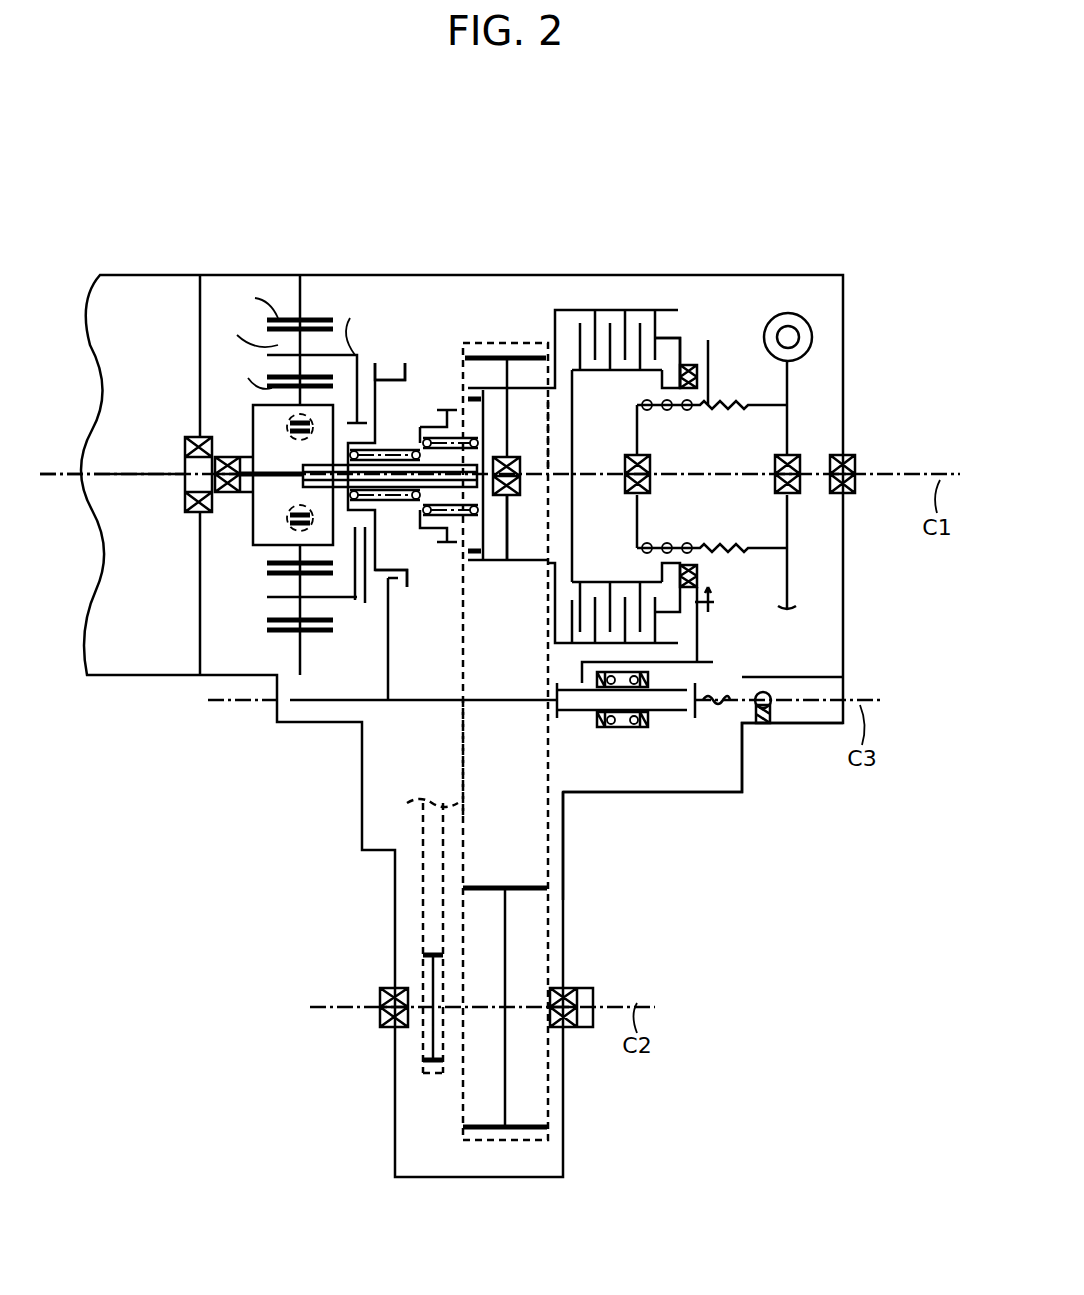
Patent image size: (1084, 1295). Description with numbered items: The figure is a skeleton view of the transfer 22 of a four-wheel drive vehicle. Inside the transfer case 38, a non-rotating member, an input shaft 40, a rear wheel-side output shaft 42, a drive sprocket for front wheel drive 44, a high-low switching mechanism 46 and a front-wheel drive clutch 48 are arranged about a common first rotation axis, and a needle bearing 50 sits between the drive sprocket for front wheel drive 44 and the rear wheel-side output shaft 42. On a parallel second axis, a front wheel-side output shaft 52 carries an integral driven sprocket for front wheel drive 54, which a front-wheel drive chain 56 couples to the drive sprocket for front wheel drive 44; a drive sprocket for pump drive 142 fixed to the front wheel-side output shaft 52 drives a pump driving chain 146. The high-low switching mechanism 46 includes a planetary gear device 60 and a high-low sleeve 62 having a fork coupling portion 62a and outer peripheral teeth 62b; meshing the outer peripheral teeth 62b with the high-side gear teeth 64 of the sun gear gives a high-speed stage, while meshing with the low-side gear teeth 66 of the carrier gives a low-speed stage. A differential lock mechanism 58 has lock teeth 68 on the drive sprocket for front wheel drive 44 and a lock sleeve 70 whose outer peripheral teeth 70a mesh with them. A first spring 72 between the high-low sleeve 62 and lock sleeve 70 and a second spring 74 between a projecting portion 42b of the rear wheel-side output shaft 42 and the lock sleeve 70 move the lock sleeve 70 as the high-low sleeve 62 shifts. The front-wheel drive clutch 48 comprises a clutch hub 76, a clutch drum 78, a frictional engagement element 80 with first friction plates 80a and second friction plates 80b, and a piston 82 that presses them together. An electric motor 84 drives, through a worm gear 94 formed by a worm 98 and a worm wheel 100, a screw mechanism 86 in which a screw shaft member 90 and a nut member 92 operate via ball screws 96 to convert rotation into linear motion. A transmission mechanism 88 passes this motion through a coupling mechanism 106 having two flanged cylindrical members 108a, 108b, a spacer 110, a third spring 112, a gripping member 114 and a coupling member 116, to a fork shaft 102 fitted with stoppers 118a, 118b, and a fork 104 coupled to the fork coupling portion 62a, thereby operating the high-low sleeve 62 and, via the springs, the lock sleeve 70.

The transfer 22 is at (800, 168).
The transfer case 38 is at (218, 274).
The input shaft 40 is at (143, 474).
The rear wheel-side output shaft 42 is at (858, 474).
The projecting portion 42b is at (549, 432).
The drive sprocket for front wheel drive 44 is at (495, 342).
The high-low switching mechanism 46 is at (358, 240).
The front-wheel drive clutch 48 is at (643, 427).
The needle bearing 50 is at (518, 493).
The front wheel-side output shaft 52 is at (485, 1010).
The driven sprocket for front wheel drive 54 is at (512, 885).
The front-wheel drive chain 56 is at (462, 747).
The differential lock mechanism 58 is at (455, 349).
The planetary gear device 60 is at (298, 292).
The high-low sleeve 62 is at (393, 540).
The fork coupling portion 62a is at (378, 363).
The outer peripheral teeth 62b is at (298, 427).
The high-side gear teeth 64 is at (300, 518).
The low-side gear teeth 66 is at (363, 600).
The lock teeth 68 is at (468, 545).
The lock sleeve 70 is at (393, 396).
The outer peripheral teeth 70a is at (400, 428).
The first spring 72 is at (422, 512).
The second spring 74 is at (500, 455).
The clutch hub 76 is at (594, 375).
The clutch drum 78 is at (598, 310).
The frictional engagement element 80 is at (662, 336).
The first friction plates 80a is at (615, 585).
The second friction plates 80b is at (575, 628).
The piston 82 is at (698, 370).
The electric motor 84 is at (782, 300).
The screw mechanism 86 is at (712, 566).
The transmission mechanism 88 is at (738, 760).
The screw shaft member 90 is at (740, 547).
The nut member 92 is at (712, 378).
The worm gear 94 is at (831, 351).
The ball screws 96 is at (668, 412).
The worm 98 is at (790, 337).
The worm wheel 100 is at (789, 370).
The fork shaft 102 is at (437, 698).
The fork 104 is at (390, 612).
The coupling mechanism 106 is at (580, 752).
The flanged cylindrical member 108a is at (575, 708).
The flanged cylindrical member 108b is at (672, 688).
The spacer 110 is at (645, 700).
The third spring 112 is at (600, 725).
The gripping member 114 is at (585, 662).
The coupling member 116 is at (700, 625).
The stopper 118a is at (555, 707).
The stopper 118b is at (770, 712).
The drive sprocket for pump drive 142 is at (432, 955).
The pump driving chain 146 is at (425, 872).